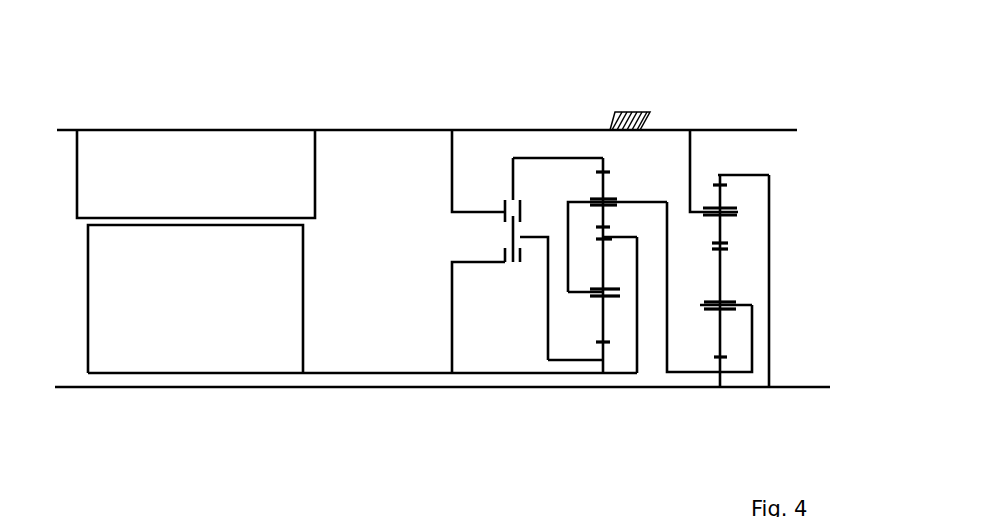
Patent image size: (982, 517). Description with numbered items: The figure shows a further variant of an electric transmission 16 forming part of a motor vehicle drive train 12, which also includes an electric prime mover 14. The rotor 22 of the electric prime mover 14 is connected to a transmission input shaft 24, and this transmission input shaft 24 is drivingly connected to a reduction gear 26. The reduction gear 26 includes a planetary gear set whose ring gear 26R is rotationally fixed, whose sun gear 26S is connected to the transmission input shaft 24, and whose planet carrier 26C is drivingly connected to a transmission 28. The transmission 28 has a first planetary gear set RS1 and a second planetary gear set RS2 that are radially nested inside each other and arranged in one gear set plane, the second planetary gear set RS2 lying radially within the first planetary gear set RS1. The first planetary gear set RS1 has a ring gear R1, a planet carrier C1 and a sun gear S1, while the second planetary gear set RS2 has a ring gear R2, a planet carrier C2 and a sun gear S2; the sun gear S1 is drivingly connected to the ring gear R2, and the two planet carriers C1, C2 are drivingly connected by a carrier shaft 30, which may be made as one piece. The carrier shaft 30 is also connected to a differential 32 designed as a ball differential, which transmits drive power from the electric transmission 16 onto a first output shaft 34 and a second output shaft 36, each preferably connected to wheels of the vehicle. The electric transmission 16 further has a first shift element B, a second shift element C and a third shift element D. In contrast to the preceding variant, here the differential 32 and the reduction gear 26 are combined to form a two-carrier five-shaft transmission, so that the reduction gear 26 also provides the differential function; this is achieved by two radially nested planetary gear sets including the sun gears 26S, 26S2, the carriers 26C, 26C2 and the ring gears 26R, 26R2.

The motor vehicle drive train 12 is at (441, 66).
The electric prime mover 14 is at (196, 117).
The electric transmission 16 is at (251, 70).
The rotor 22 is at (190, 373).
The transmission input shaft 24 is at (383, 373).
The reduction gear 26 is at (728, 200).
The transmission 28 is at (580, 425).
The carrier shaft 30 is at (667, 284).
The differential 32 is at (771, 211).
The first output shaft 34 is at (248, 387).
The second output shaft 36 is at (818, 388).
The first shift element B is at (500, 241).
The second shift element C is at (498, 227).
The third shift element D is at (500, 186).
The first planetary gear set RS1 is at (617, 76).
The second planetary gear set RS2 is at (663, 358).
The ring gear R1 is at (608, 171).
The planet carrier C1 is at (616, 202).
The sun gear S1 is at (606, 233).
The ring gear R2 is at (601, 245).
The planet carrier C2 is at (583, 294).
The sun gear S2 is at (600, 348).
The carrier 26C2 is at (700, 210).
The ring gear 26R2 is at (726, 184).
The sun gear 26S2 is at (724, 246).
The ring gear 26R is at (718, 248).
The planet carrier 26C is at (703, 306).
The sun gear 26S is at (722, 363).